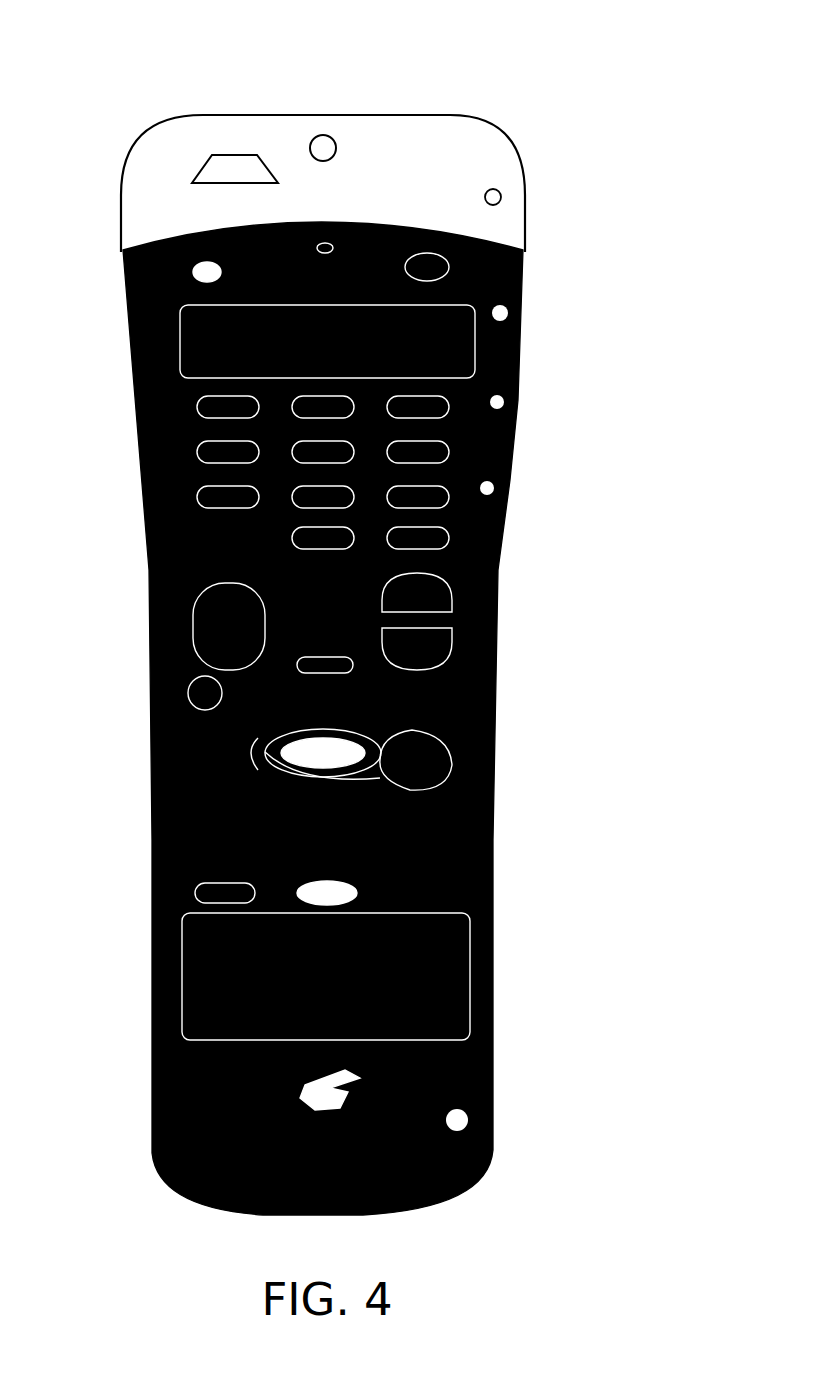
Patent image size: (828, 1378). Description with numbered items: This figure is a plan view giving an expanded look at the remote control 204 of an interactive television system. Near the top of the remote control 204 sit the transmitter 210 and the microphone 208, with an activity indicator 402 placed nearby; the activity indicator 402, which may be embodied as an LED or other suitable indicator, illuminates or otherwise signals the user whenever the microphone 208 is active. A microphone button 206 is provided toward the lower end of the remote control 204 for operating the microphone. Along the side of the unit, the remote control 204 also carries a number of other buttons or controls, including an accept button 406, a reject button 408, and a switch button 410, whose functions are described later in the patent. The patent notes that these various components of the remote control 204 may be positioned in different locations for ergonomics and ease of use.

The remote control 204 is at (493, 838).
The microphone button 206 is at (493, 1113).
The microphone 208 is at (337, 147).
The transmitter 210 is at (228, 153).
The activity indicator 402 is at (501, 196).
The accept button 406 is at (522, 302).
The reject button 408 is at (517, 388).
The switch button 410 is at (507, 478).